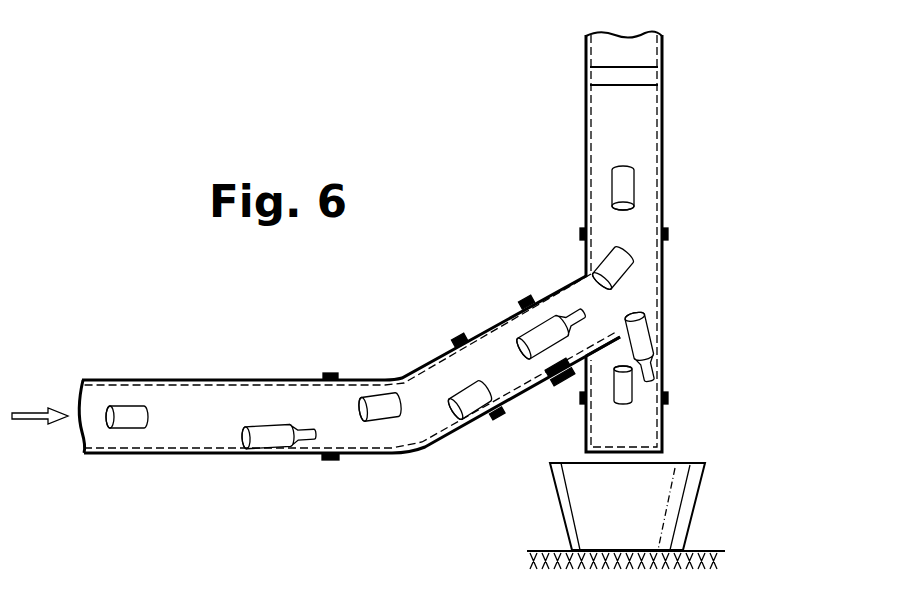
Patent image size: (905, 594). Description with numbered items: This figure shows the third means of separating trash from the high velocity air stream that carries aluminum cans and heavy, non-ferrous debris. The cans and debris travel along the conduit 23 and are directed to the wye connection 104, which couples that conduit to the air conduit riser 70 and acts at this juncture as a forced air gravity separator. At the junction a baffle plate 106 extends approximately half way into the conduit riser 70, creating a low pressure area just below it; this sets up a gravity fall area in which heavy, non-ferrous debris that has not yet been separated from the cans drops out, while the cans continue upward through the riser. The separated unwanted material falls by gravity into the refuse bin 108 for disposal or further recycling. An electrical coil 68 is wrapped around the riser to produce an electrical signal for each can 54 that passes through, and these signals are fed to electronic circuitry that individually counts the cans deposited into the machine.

The feed chute 23 is at (253, 378).
The article (cylindrical container) 54 is at (380, 396).
The electrical coil 68 is at (598, 76).
The air conduit riser 70 is at (643, 130).
The wye connection 104 is at (648, 275).
The baffle plate 106 is at (598, 346).
The refuse bin 108 is at (575, 512).